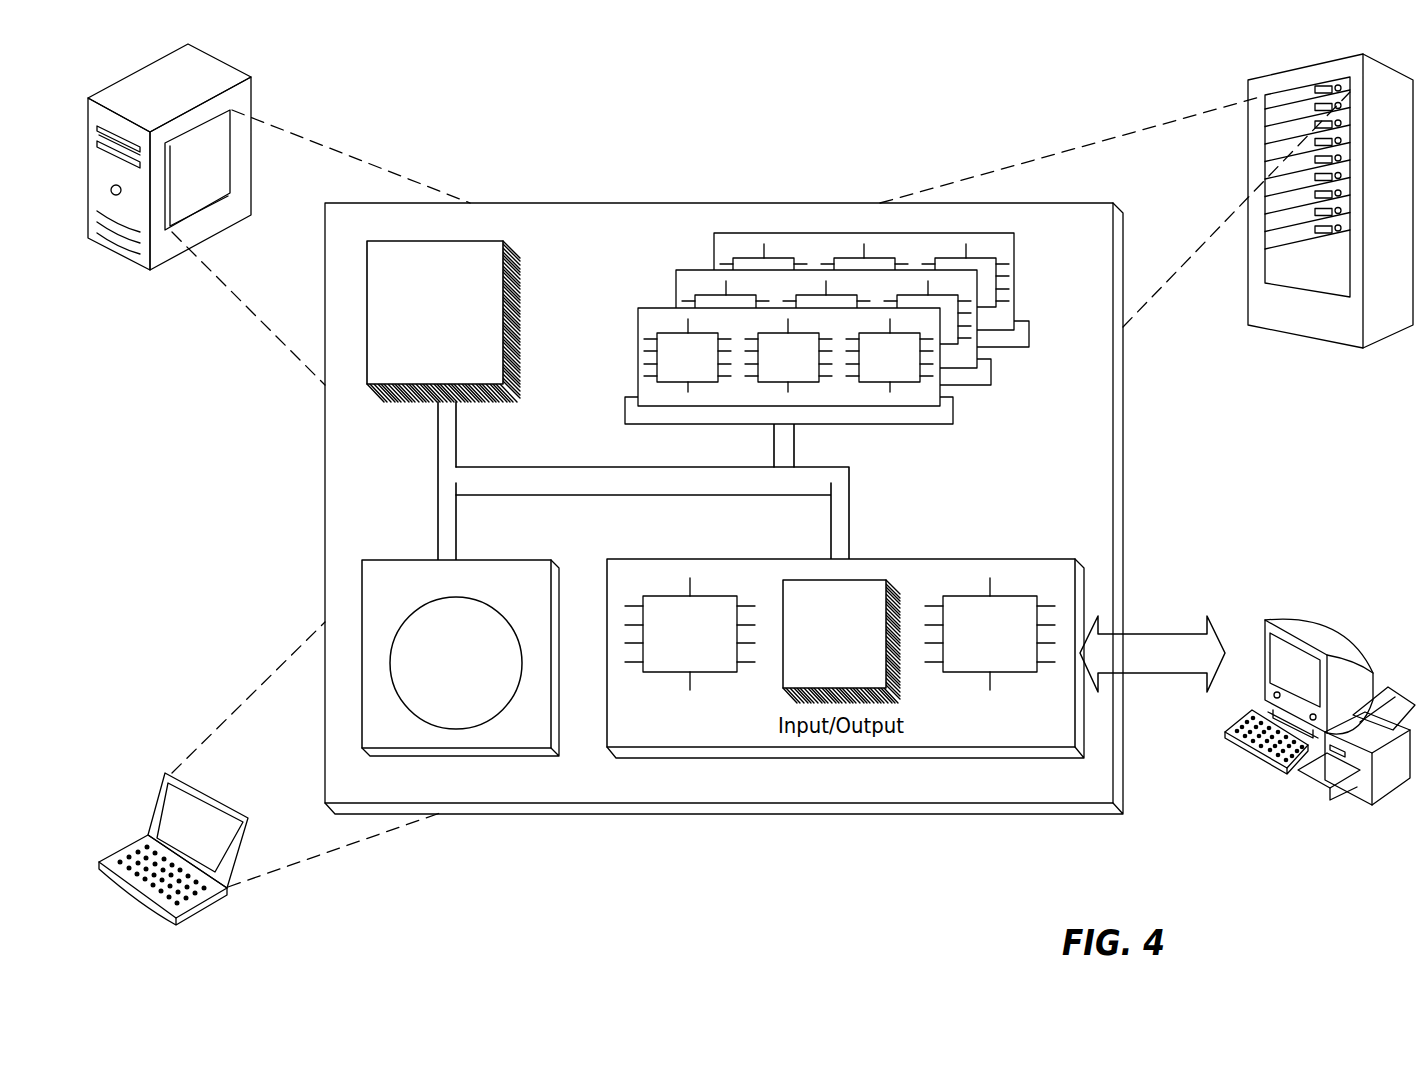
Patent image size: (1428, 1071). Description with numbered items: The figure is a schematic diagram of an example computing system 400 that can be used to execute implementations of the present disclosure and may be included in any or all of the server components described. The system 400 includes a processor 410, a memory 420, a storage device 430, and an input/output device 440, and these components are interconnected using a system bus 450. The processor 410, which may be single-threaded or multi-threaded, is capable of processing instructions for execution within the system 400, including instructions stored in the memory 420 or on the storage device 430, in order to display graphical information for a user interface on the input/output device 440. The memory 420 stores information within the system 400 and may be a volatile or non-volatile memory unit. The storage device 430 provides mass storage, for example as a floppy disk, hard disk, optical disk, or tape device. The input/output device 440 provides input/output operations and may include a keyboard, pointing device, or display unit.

The computing system 400 is at (538, 123).
The processor 410 is at (492, 376).
The memory 420 is at (1020, 383).
The storage device 430 is at (538, 741).
The input/output device 440 is at (1265, 627).
The system bus 450 is at (640, 483).